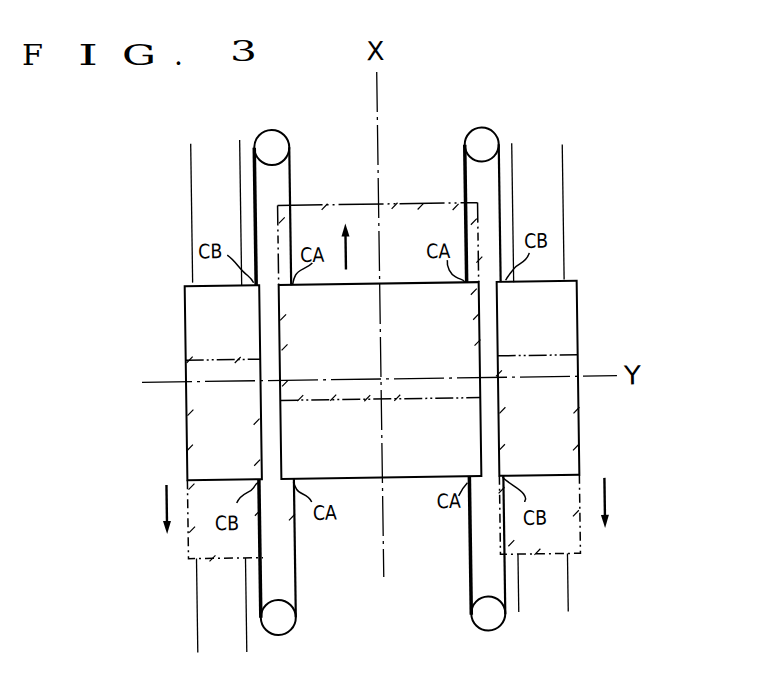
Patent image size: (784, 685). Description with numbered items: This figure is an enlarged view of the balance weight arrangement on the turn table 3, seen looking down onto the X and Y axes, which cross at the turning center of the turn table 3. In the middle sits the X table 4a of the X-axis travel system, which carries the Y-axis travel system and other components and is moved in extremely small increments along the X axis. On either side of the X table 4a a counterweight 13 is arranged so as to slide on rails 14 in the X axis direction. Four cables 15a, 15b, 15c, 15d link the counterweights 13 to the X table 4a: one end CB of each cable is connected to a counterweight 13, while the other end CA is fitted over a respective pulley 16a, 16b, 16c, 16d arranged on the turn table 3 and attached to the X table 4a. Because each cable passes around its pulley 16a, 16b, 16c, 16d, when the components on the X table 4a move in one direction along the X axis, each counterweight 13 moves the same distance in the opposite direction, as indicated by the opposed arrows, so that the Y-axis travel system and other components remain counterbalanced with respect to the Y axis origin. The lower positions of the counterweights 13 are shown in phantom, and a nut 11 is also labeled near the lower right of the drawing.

The turn table 3 is at (357, 610).
The X table 4a is at (431, 469).
The nut 11 is at (502, 584).
The counterweight 13 is at (196, 320).
The rails 14 is at (196, 165).
The cable 15a is at (467, 527).
The cable 15b is at (468, 179).
The cable 15c is at (294, 562).
The cable 15d is at (292, 182).
The pulley 16a is at (488, 614).
The pulley 16b is at (485, 144).
The pulley 16c is at (277, 619).
The pulley 16d is at (274, 144).